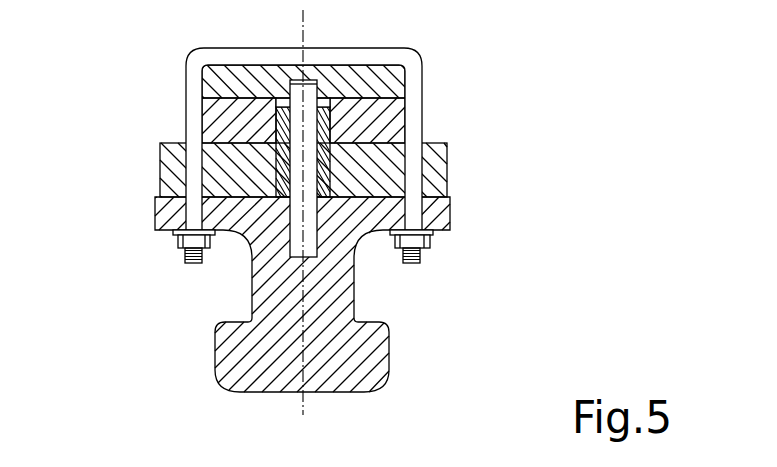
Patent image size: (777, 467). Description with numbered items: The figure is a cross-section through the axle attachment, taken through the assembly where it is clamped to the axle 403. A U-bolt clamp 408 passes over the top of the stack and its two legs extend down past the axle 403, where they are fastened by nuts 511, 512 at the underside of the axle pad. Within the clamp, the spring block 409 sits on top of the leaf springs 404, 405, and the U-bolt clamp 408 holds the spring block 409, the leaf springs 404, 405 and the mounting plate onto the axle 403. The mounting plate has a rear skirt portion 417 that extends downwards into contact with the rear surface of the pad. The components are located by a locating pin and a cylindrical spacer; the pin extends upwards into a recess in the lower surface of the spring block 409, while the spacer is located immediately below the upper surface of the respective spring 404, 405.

The standard axle 403 is at (250, 372).
The leaf spring 404 is at (225, 123).
The leaf spring 405 is at (388, 118).
The U-bolt clamp 408 is at (405, 57).
The spring block 409 is at (208, 63).
The rear skirt portion 417 is at (167, 170).
The nut 511 is at (192, 243).
The nut 512 is at (417, 243).